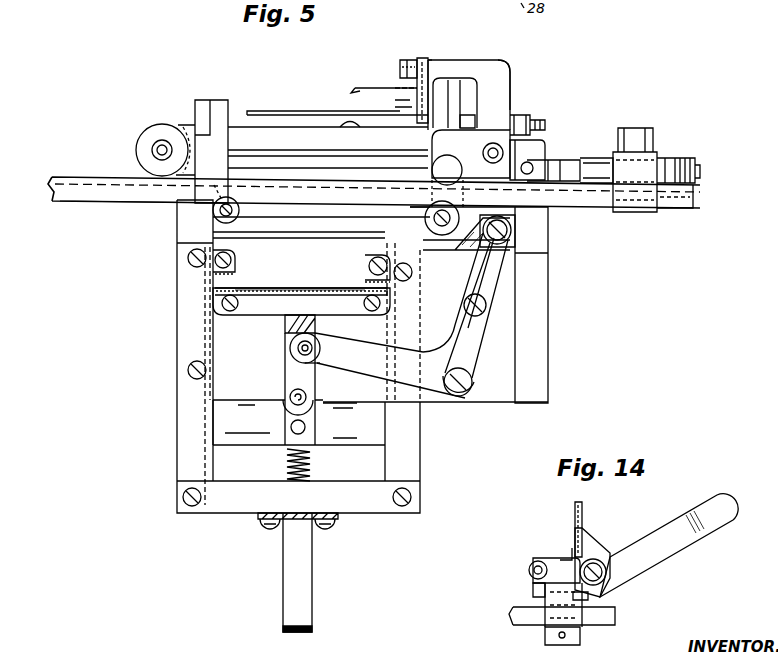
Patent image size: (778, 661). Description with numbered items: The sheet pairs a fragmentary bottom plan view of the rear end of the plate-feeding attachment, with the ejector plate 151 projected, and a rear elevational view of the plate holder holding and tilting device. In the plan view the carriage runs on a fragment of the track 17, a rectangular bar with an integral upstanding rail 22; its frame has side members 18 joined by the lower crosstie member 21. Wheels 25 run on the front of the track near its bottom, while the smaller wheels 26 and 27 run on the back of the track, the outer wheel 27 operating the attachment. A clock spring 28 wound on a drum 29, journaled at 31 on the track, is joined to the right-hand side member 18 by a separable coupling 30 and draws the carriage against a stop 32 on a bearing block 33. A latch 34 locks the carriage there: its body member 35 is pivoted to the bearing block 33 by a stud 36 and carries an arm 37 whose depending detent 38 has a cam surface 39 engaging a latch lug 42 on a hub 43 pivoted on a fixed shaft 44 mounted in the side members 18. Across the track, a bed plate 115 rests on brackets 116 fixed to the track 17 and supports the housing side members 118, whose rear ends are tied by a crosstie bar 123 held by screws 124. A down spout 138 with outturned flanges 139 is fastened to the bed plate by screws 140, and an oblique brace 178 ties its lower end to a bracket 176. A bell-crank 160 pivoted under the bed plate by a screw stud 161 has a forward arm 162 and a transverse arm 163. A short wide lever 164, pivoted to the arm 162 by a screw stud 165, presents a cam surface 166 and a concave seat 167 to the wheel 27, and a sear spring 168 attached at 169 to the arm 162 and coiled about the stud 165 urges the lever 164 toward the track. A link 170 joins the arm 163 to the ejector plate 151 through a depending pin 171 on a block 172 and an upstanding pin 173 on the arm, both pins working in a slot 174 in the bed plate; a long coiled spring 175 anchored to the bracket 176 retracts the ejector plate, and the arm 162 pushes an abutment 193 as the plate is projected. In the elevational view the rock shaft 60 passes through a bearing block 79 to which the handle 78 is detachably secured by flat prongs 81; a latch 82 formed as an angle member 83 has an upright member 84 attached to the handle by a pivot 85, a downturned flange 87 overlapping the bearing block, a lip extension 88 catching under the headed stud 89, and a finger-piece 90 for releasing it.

In FIG. 5, the track 17 is at (135, 201).
In FIG. 5, the side members 18 is at (206, 100).
In FIG. 5, the lower crosstie member 21 is at (272, 137).
In FIG. 5, the rail 22 is at (64, 177).
In FIG. 5, the wheels 25 is at (146, 135).
In FIG. 5, the wheel 26 is at (234, 199).
In FIG. 5, the wheel 27 is at (417, 127).
In FIG. 5, the spring 28 is at (700, 172).
In FIG. 5, the drum 29 is at (672, 162).
In FIG. 5, the separable coupling 30 is at (545, 160).
In FIG. 5, the journal 31 is at (635, 135).
In FIG. 5, the stop 32 is at (472, 117).
In FIG. 5, the bearing block 33 is at (500, 120).
In FIG. 5, the latch 34 is at (518, 75).
In FIG. 5, the body member 35 is at (512, 92).
In FIG. 5, the stud 36 is at (505, 156).
In FIG. 5, the arm 37 is at (436, 59).
In FIG. 5, the detent 38 is at (400, 56).
In FIG. 5, the cam surface 39 is at (400, 67).
In FIG. 5, the latch lug 42 is at (421, 57).
In FIG. 5, the hub 43 is at (396, 107).
In FIG. 5, the shaft 44 is at (352, 91).
In FIG. 5, the bed plate 115 is at (220, 332).
In FIG. 5, the brackets 116 is at (187, 343).
In FIG. 5, the side members 118 is at (299, 460).
In FIG. 5, the crosstie bar 123 is at (249, 505).
In FIG. 5, the screws 124 is at (180, 497).
In FIG. 5, the down spout 138 is at (308, 283).
In FIG. 5, the outturned flanges 139 is at (323, 300).
In FIG. 5, the screws 140 is at (237, 297).
In FIG. 5, the ejector plate 151 is at (222, 426).
In FIG. 5, the bell-crank 160 is at (422, 357).
In FIG. 5, the screw stud 161 is at (458, 367).
In FIG. 5, the bell-crank arm 162 is at (490, 288).
In FIG. 5, the bell-crank arm 163 is at (393, 377).
In FIG. 5, the lever 164 is at (472, 278).
In FIG. 5, the screw stud 165 is at (512, 223).
In FIG. 5, the cam surface 166 is at (425, 223).
In FIG. 5, the concave seat 167 is at (470, 210).
In FIG. 5, the sear spring 168 is at (464, 303).
In FIG. 5, the spring attachment 169 is at (495, 318).
In FIG. 5, the link 170 is at (297, 382).
In FIG. 5, the pin 171 is at (249, 416).
In FIG. 5, the block 172 is at (316, 410).
In FIG. 5, the pin 173 is at (290, 349).
In FIG. 5, the slot 174 is at (323, 355).
In FIG. 5, the coiled spring 175 is at (315, 467).
In FIG. 5, the bracket 176 is at (313, 578).
In FIG. 5, the brace 178 is at (283, 520).
In FIG. 5, the abutment 193 is at (318, 327).
In FIG. 14, the rock shaft 60 is at (621, 614).
In FIG. 14, the handle 78 is at (718, 500).
In FIG. 14, the bearing block 79 is at (548, 627).
In FIG. 14, the prongs 81 is at (540, 595).
In FIG. 14, the latch 82 is at (611, 543).
In FIG. 14, the angle member 83 is at (615, 577).
In FIG. 14, the upright member 84 is at (572, 560).
In FIG. 14, the pivot 85 is at (618, 590).
In FIG. 14, the downturned flange 87 is at (535, 593).
In FIG. 14, the lip extension 88 is at (533, 560).
In FIG. 14, the stud 89 is at (530, 564).
In FIG. 14, the finger-piece 90 is at (575, 506).